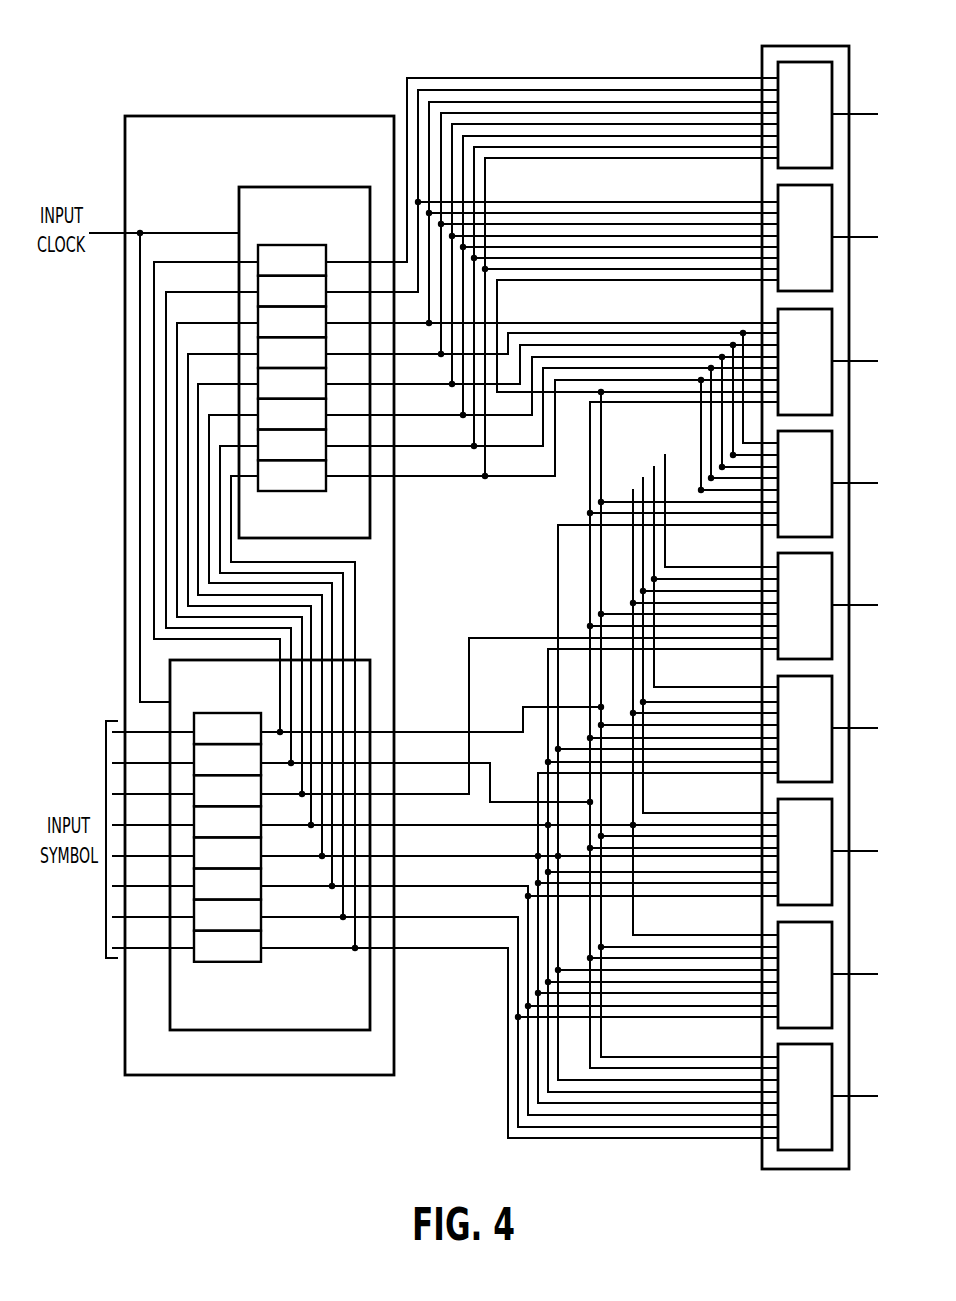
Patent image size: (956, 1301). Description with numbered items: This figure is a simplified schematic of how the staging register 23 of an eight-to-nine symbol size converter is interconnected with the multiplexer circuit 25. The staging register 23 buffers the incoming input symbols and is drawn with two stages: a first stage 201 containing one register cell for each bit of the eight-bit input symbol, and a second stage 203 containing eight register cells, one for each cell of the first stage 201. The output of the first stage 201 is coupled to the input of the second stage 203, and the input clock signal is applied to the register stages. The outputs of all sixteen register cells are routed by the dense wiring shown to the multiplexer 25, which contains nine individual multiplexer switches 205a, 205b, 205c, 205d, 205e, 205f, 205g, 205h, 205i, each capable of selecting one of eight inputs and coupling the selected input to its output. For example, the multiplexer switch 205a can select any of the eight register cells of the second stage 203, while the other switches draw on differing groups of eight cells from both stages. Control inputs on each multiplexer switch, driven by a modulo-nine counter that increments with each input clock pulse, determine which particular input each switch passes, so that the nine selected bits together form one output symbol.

The staging register 23 is at (162, 115).
The second stage 203 is at (290, 187).
The first stage 201 is at (255, 1032).
The multiplexer circuit 25 is at (778, 46).
The multiplexer switch 205a is at (832, 100).
The multiplexer switch 205b is at (832, 223).
The multiplexer switch 205c is at (832, 347).
The multiplexer switch 205d is at (832, 469).
The multiplexer switch 205e is at (832, 591).
The multiplexer switch 205f is at (832, 714).
The multiplexer switch 205g is at (832, 837).
The multiplexer switch 205h is at (832, 960).
The multiplexer switch 205i is at (832, 1082).